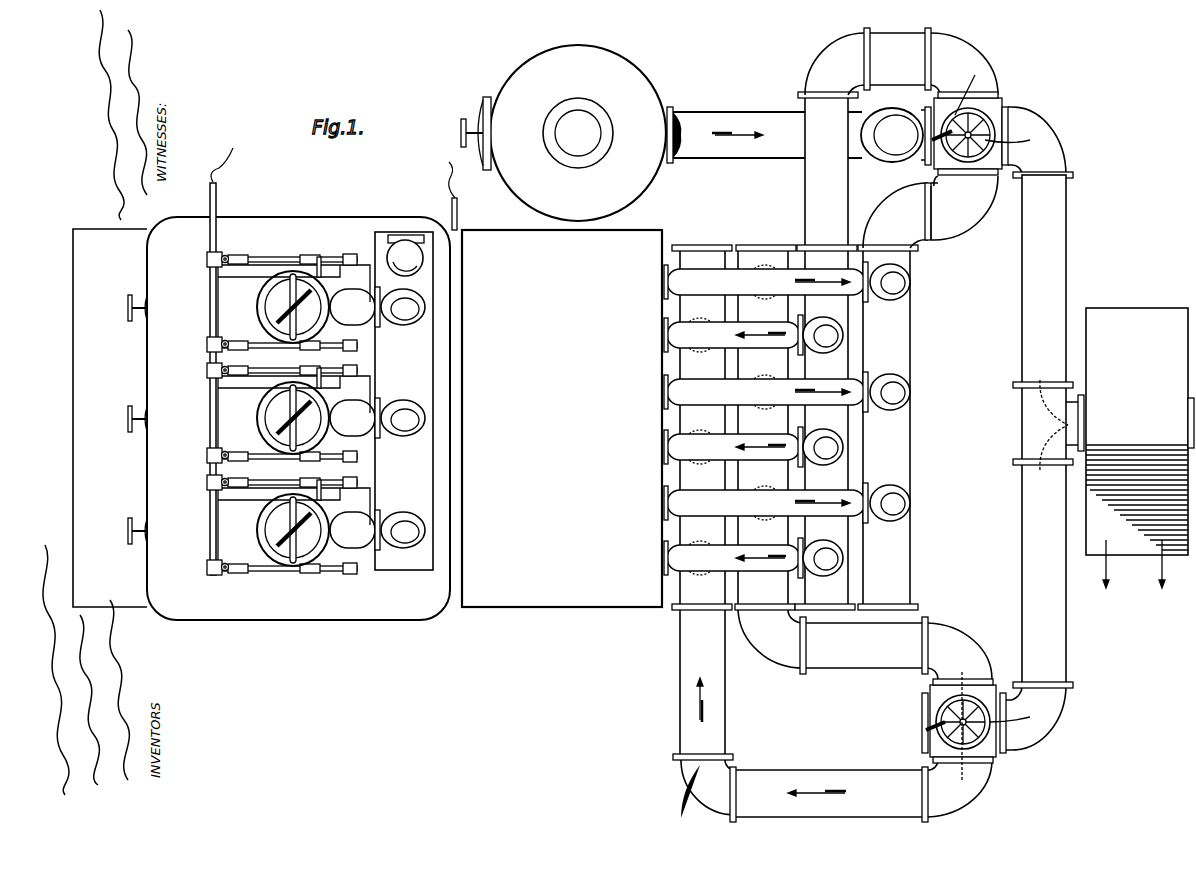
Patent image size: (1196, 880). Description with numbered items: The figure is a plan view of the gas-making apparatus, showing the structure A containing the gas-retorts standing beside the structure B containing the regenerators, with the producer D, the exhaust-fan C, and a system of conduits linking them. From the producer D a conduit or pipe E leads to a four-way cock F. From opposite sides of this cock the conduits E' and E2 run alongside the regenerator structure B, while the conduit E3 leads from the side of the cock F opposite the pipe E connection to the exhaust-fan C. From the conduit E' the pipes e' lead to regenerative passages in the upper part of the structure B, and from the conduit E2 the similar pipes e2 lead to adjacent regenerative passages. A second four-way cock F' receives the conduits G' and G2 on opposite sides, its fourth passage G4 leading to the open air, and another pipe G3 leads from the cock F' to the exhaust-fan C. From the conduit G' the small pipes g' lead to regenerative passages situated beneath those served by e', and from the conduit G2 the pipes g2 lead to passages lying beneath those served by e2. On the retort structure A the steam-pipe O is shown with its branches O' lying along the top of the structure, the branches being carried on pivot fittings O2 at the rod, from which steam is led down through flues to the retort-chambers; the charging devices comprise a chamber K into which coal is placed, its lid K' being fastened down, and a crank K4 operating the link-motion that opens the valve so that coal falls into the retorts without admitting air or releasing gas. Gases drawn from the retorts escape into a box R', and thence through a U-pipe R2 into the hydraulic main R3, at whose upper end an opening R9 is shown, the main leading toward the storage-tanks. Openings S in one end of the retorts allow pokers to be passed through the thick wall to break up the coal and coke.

The structure containing the gas-retorts A is at (261, 418).
The structure containing the regenerators B is at (557, 402).
The exhaust-fan C is at (1140, 448).
The producer D is at (563, 133).
The conduit or pipe E is at (796, 135).
The conduit E' is at (896, 319).
The conduit E2 is at (928, 393).
The conduit E3 is at (1046, 396).
The four-way cock F is at (977, 125).
The four-way cock F' is at (981, 729).
The conduit G' is at (832, 526).
The conduit G2 is at (863, 455).
The pipe G3 is at (1039, 659).
The fourth passage G4 is at (921, 713).
The chamber K is at (280, 418).
The lid K' is at (296, 418).
The crank K4 is at (321, 258).
The steam-pipe O is at (230, 379).
The branches O' is at (287, 415).
The pivot O2 is at (226, 405).
The box R' is at (294, 416).
The U-pipe R2 is at (377, 418).
The hydraulic main R3 is at (404, 401).
The opening R9 is at (405, 255).
The opening S is at (137, 427).
The pipes e' is at (753, 446).
The pipes e2 is at (787, 392).
The small pipes g' is at (700, 454).
The pipes g2 is at (765, 400).